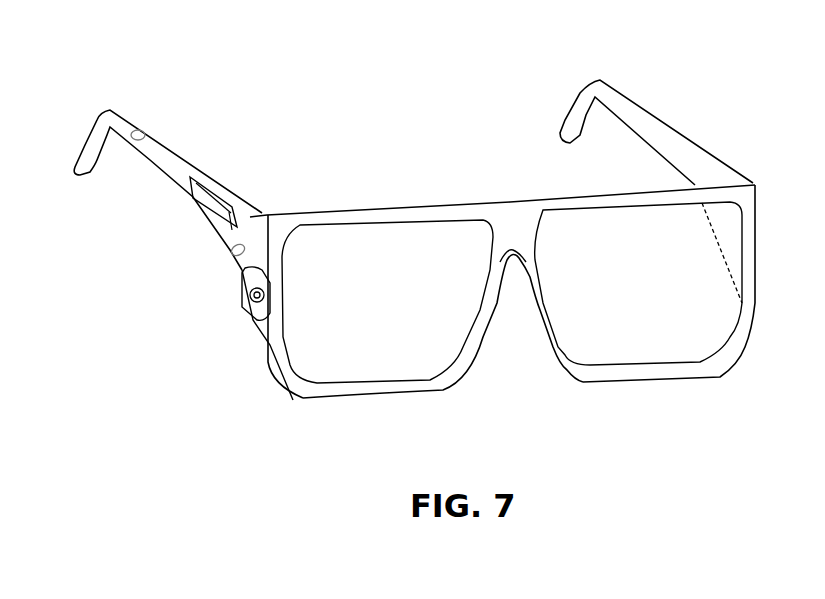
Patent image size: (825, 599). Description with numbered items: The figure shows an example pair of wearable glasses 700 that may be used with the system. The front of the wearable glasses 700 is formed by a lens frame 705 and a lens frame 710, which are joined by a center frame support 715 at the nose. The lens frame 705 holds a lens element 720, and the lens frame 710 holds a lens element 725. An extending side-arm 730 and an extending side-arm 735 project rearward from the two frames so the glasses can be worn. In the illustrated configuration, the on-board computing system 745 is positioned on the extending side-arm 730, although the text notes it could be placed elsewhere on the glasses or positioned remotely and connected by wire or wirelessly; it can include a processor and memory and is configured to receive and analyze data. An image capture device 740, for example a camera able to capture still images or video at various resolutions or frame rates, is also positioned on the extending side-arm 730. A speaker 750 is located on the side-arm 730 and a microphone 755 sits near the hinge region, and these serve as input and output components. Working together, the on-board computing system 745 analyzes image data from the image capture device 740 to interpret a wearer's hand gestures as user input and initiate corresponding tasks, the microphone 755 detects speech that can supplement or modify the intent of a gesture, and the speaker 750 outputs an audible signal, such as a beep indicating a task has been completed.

The wearable glasses 700 is at (660, 80).
The lens frame 705 is at (308, 213).
The lens frame 710 is at (677, 192).
The center frame support 715 is at (512, 215).
The lens element 720 is at (330, 365).
The lens element 725 is at (683, 337).
The extending side-arm 730 is at (168, 160).
The extending side-arm 735 is at (675, 153).
The image capture device 740 is at (245, 285).
The on-board computing system 745 is at (202, 198).
The speaker 750 is at (142, 142).
The microphone 755 is at (238, 255).